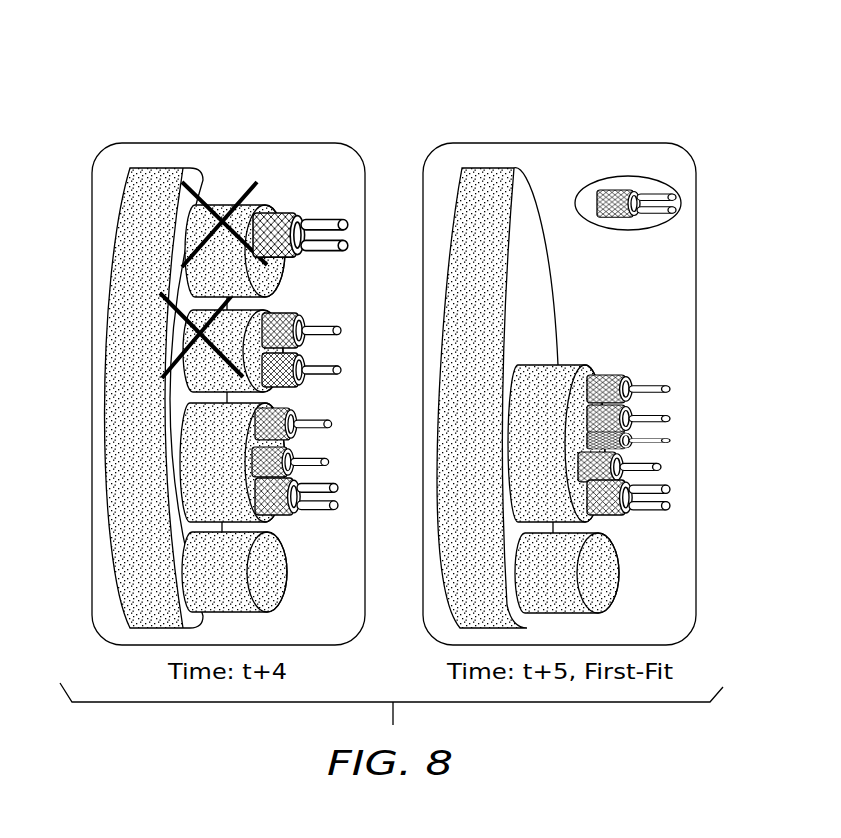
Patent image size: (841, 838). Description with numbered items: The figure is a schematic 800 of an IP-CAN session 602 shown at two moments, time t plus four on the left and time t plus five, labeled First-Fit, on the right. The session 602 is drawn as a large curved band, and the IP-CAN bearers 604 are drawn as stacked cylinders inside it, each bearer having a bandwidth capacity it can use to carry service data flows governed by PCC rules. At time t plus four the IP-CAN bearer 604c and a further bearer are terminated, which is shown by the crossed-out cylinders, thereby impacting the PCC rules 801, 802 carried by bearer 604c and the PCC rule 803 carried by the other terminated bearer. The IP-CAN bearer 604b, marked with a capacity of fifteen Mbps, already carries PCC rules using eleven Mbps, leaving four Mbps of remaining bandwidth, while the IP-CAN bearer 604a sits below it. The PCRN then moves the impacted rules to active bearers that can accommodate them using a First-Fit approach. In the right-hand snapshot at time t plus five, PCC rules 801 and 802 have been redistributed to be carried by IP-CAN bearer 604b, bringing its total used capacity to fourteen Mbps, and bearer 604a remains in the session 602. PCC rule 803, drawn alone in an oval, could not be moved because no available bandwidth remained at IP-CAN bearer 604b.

The schematic 800 is at (77, 37).
The IP-CAN session 602 is at (168, 168).
The IP-CAN bearers 604 is at (228, 205).
The IP-CAN bearer 604c is at (185, 378).
The IP-CAN bearer 604b is at (270, 522).
The IP-CAN bearer 604a is at (265, 598).
The PCC rule 803 is at (289, 213).
The PCC rule 802 is at (296, 313).
The PCC rule 801 is at (294, 386).